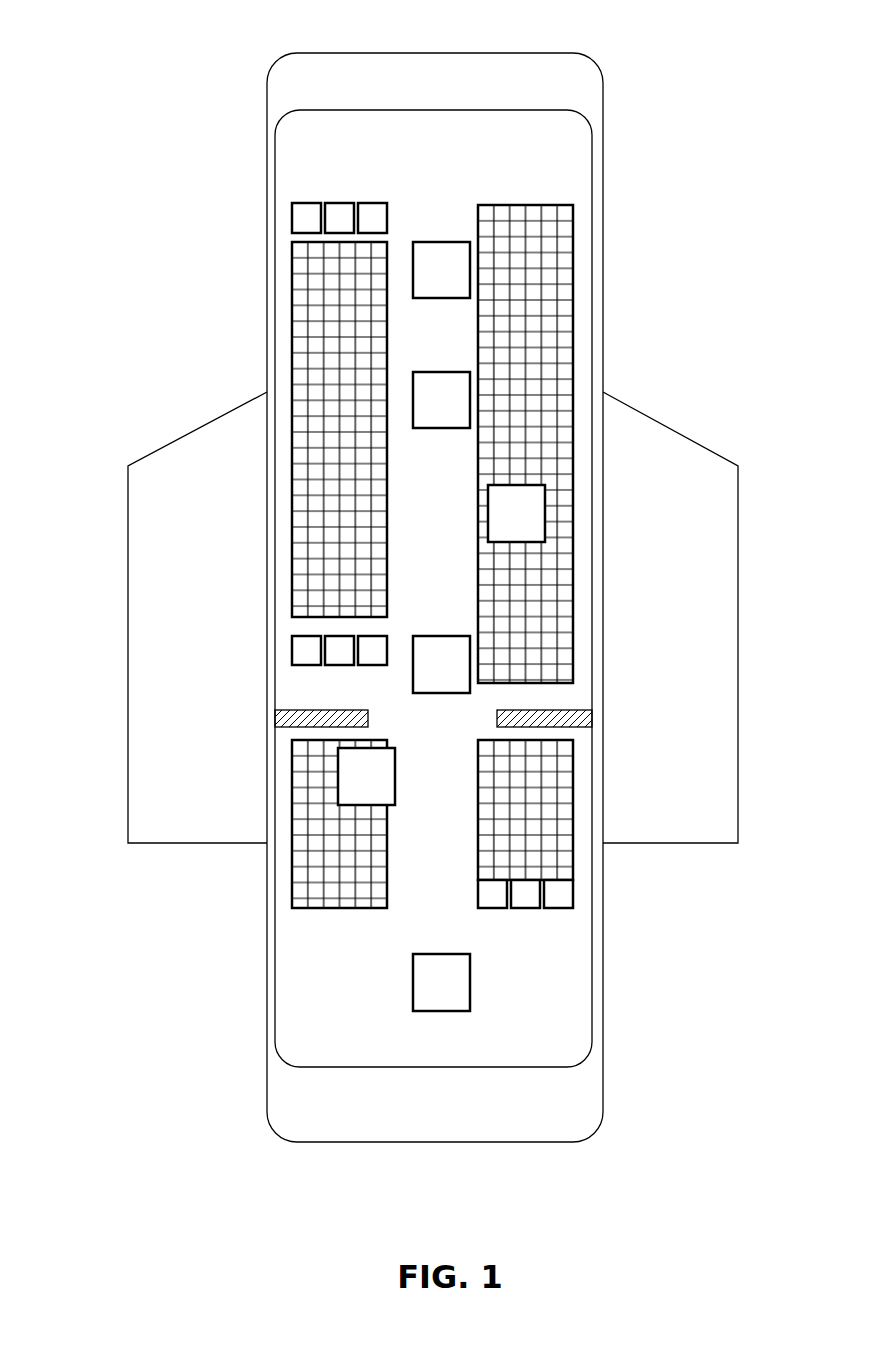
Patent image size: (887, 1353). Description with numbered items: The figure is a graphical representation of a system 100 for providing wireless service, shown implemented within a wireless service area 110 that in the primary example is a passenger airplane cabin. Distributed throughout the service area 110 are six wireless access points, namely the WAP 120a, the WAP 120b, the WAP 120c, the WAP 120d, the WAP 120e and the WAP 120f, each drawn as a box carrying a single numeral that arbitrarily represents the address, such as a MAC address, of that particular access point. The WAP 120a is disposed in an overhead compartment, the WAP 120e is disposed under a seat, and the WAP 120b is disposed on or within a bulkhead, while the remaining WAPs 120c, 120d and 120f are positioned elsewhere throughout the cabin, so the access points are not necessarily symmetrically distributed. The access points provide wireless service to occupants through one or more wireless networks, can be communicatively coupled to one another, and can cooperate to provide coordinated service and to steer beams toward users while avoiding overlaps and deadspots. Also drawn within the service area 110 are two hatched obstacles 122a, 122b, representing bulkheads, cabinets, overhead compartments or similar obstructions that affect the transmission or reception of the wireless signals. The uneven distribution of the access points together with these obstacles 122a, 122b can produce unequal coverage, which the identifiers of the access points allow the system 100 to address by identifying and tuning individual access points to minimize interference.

The system for providing wireless service 100 is at (132, 50).
The wireless service area 110 is at (603, 96).
The wireless access point 120a is at (457, 643).
The wireless access point 120b is at (460, 982).
The wireless access point 120c is at (432, 252).
The wireless access point 120d is at (528, 512).
The wireless access point 120e is at (385, 778).
The wireless access point 120f is at (470, 388).
The obstacle 122a is at (310, 718).
The obstacle 122b is at (586, 718).